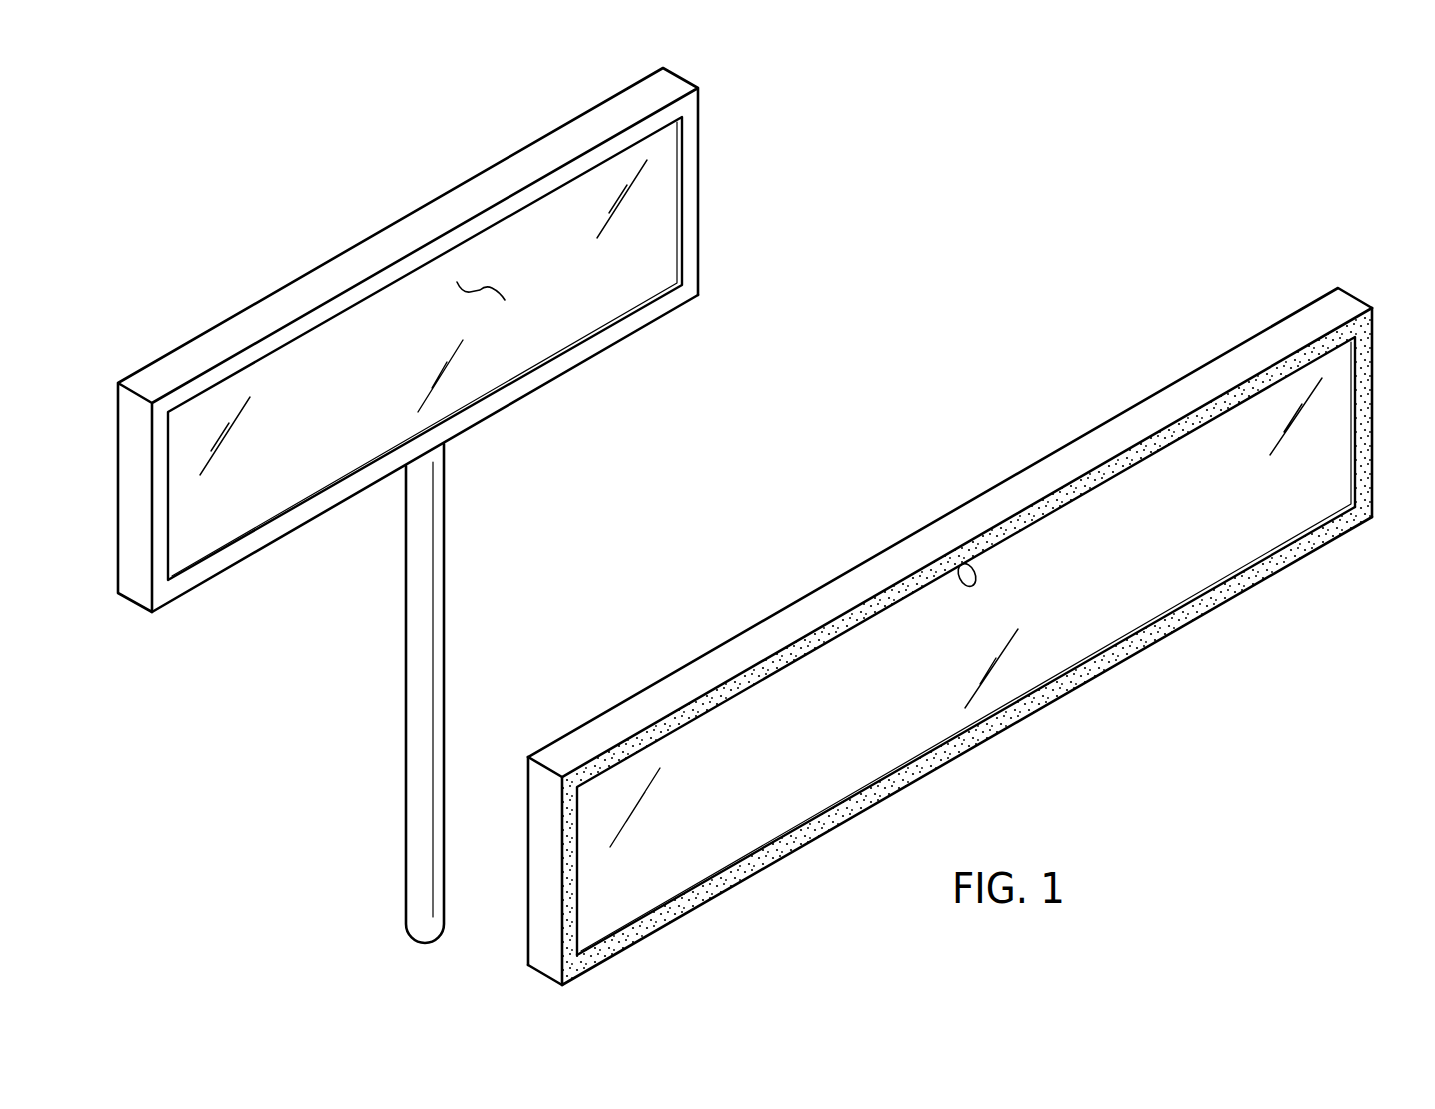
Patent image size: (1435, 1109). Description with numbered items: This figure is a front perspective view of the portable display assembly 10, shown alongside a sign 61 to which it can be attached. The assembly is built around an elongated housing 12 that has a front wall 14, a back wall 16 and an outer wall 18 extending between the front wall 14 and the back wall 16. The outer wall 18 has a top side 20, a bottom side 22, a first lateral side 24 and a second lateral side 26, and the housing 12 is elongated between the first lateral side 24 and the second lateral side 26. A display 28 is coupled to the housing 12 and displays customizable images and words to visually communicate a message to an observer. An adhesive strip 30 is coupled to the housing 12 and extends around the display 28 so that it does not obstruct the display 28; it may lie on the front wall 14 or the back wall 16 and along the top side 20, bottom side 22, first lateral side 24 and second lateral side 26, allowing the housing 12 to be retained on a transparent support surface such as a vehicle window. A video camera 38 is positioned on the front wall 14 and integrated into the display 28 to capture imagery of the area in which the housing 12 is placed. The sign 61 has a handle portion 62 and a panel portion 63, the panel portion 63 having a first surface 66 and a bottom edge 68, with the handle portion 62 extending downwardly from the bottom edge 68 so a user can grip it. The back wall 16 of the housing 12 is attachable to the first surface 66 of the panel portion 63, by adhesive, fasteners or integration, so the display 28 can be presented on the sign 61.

The portable display assembly 10 is at (1043, 152).
The housing 12 is at (1349, 289).
The front wall 14 is at (1337, 512).
The back wall 16 is at (527, 826).
The outer wall 18 is at (703, 673).
The top side 20 is at (883, 570).
The bottom side 22 is at (740, 880).
The first lateral side 24 is at (543, 877).
The second lateral side 26 is at (1372, 348).
The display 28 is at (1018, 629).
The adhesive strip 30 is at (1187, 610).
The video camera 38 is at (976, 571).
The sign 61 is at (293, 131).
The handle portion 62 is at (418, 662).
The panel portion 63 is at (699, 295).
The first surface 66 is at (483, 287).
The bottom edge 68 is at (505, 409).